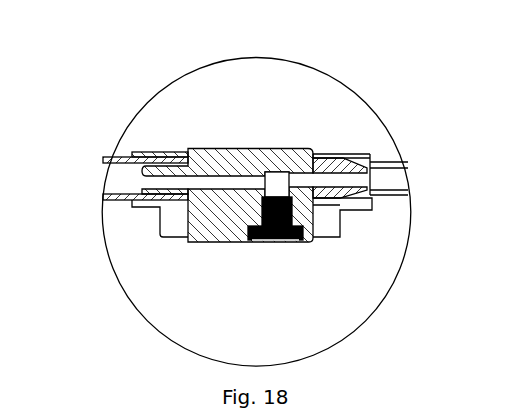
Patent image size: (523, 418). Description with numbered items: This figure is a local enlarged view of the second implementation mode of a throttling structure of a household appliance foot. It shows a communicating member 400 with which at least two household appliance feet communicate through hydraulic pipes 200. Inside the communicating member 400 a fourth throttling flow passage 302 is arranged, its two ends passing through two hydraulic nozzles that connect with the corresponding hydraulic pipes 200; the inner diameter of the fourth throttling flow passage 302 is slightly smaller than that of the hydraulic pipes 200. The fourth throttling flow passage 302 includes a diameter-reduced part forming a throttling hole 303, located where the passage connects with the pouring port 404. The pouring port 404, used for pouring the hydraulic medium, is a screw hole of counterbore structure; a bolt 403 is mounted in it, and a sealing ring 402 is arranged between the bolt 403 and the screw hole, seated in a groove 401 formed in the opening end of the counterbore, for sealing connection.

The hydraulic pipe 200 is at (112, 182).
The fourth throttling flow passage 302 is at (203, 175).
The throttling hole 303 is at (289, 174).
The communicating member 400 is at (312, 154).
The groove 401 is at (316, 221).
The sealing ring 402 is at (305, 223).
The bolt 403 is at (299, 239).
The pouring port 404 is at (260, 193).